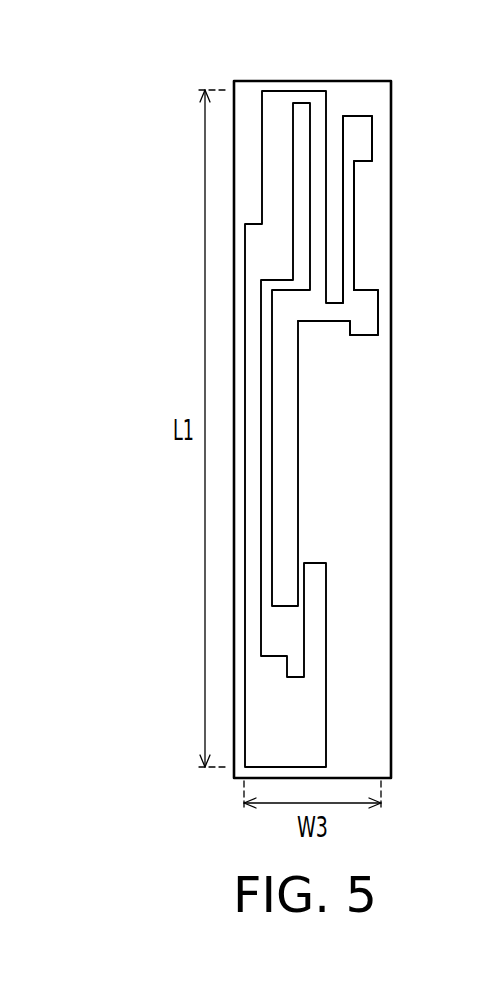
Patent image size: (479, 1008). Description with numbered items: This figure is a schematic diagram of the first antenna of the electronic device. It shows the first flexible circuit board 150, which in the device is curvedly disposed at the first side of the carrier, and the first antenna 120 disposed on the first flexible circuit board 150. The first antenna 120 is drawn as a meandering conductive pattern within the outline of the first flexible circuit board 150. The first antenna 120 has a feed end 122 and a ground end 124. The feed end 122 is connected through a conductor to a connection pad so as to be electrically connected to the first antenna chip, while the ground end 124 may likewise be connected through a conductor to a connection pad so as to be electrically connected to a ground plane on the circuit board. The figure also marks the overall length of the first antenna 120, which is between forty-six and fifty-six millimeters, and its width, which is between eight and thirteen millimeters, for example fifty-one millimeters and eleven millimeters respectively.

The first flexible circuit board 150 is at (211, 65).
The first antenna 120 is at (280, 100).
The feed end 122 is at (363, 312).
The ground end 124 is at (362, 138).